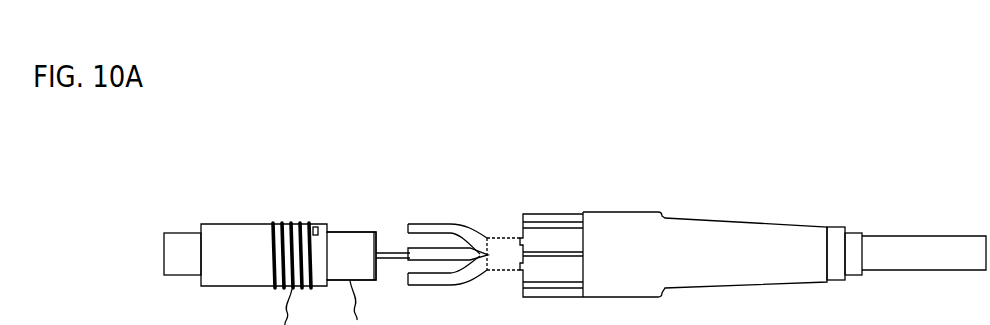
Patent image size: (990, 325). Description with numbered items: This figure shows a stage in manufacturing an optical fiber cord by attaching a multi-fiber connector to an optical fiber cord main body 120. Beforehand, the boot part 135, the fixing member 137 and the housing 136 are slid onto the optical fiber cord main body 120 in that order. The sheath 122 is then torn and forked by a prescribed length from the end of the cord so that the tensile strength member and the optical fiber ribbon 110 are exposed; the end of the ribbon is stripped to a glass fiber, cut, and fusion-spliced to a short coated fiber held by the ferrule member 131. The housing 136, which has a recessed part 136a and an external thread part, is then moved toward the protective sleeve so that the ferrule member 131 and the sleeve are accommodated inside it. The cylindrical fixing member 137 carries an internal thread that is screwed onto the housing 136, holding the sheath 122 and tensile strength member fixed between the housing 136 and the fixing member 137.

The optical fiber ribbon 110 is at (430, 255).
The optical fiber cord main body 120 is at (937, 237).
The sheath 122 is at (505, 247).
The ferrule member 131 is at (180, 245).
The boot part 135 is at (723, 235).
The housing 136 is at (225, 224).
The recessed part 136a is at (352, 230).
The fixing member 137 is at (553, 218).